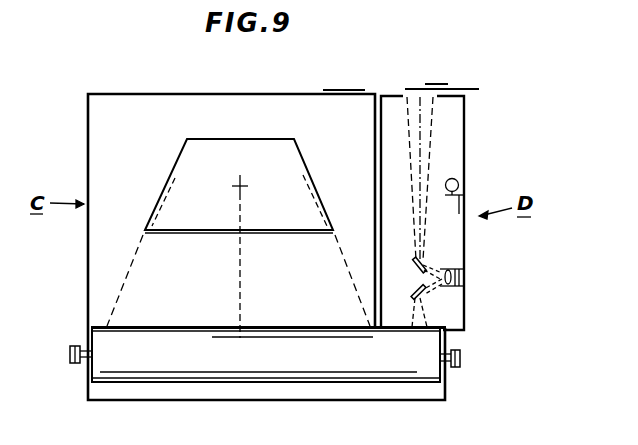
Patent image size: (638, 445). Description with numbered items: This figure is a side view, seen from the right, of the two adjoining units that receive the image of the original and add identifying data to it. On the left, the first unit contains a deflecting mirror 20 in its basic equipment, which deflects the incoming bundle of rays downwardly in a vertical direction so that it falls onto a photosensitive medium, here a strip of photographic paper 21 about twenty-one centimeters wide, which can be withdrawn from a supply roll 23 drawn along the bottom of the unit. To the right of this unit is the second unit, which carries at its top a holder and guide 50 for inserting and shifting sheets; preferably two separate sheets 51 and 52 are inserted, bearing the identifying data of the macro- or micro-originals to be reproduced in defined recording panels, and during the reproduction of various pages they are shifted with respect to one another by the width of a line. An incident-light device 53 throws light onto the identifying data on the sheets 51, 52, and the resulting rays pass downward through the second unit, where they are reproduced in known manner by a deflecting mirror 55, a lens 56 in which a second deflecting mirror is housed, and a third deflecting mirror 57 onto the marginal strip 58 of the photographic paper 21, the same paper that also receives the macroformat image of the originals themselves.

The deflecting mirror 20 is at (198, 157).
The photographic paper 21 is at (296, 326).
The supply roll 23 is at (305, 360).
The holder and guide 50 is at (353, 88).
The sheet 51 is at (383, 93).
The sheet 52 is at (459, 89).
The incident-light device 53 is at (458, 182).
The deflecting mirror 55 is at (427, 262).
The lens 56 is at (463, 278).
The third deflecting mirror 57 is at (428, 294).
The marginal strip 58 is at (440, 324).